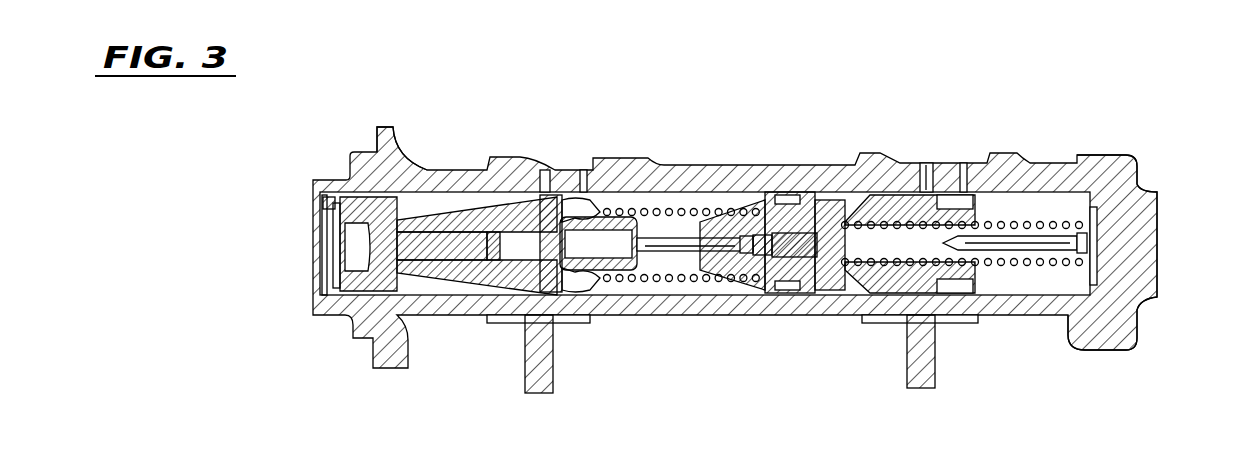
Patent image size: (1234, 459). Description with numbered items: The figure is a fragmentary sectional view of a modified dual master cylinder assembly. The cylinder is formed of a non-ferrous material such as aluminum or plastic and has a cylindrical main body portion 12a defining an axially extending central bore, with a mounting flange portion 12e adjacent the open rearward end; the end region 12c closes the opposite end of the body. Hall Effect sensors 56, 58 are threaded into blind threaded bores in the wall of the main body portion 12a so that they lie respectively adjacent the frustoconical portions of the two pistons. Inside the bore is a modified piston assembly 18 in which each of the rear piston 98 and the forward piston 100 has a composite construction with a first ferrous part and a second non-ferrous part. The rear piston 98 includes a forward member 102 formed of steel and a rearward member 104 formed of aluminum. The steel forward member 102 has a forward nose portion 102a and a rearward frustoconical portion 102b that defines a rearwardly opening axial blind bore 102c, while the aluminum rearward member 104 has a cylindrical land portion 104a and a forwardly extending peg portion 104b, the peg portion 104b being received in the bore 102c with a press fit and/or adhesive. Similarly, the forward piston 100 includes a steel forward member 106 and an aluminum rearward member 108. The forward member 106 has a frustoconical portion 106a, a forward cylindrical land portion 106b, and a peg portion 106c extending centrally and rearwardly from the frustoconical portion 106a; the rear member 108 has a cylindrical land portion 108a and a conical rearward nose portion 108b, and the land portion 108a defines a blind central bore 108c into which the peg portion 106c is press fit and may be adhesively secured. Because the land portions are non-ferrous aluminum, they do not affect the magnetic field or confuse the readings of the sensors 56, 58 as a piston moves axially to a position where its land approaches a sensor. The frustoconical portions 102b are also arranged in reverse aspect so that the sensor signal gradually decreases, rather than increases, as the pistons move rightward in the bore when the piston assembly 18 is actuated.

The main body portion 12a is at (730, 165).
The housing end flange 12c is at (1153, 217).
The mounting flange portion 12e is at (384, 127).
The piston assembly 18 is at (673, 240).
The Hall Effect sensor 56 is at (524, 350).
The Hall Effect sensor 58 is at (906, 350).
The rear piston 98 is at (467, 288).
The forward piston 100 is at (925, 227).
The forward member 102 is at (527, 183).
The forward nose portion 102a is at (613, 227).
The rearward frustoconical portion 102b is at (440, 212).
The axial blind bore 102c is at (492, 237).
The rearward member 104 is at (366, 255).
The cylindrical land portion 104a is at (345, 193).
The peg portion 104b is at (422, 250).
The forward member 106 is at (896, 236).
The frustoconical portion 106a is at (873, 198).
The forward cylindrical land portion 106b is at (973, 213).
The peg portion 106c is at (785, 243).
The rearward member 108 is at (769, 229).
The cylindrical land portion 108a is at (800, 273).
The conical rearward nose portion 108b is at (763, 273).
The blind central bore 108c is at (813, 237).